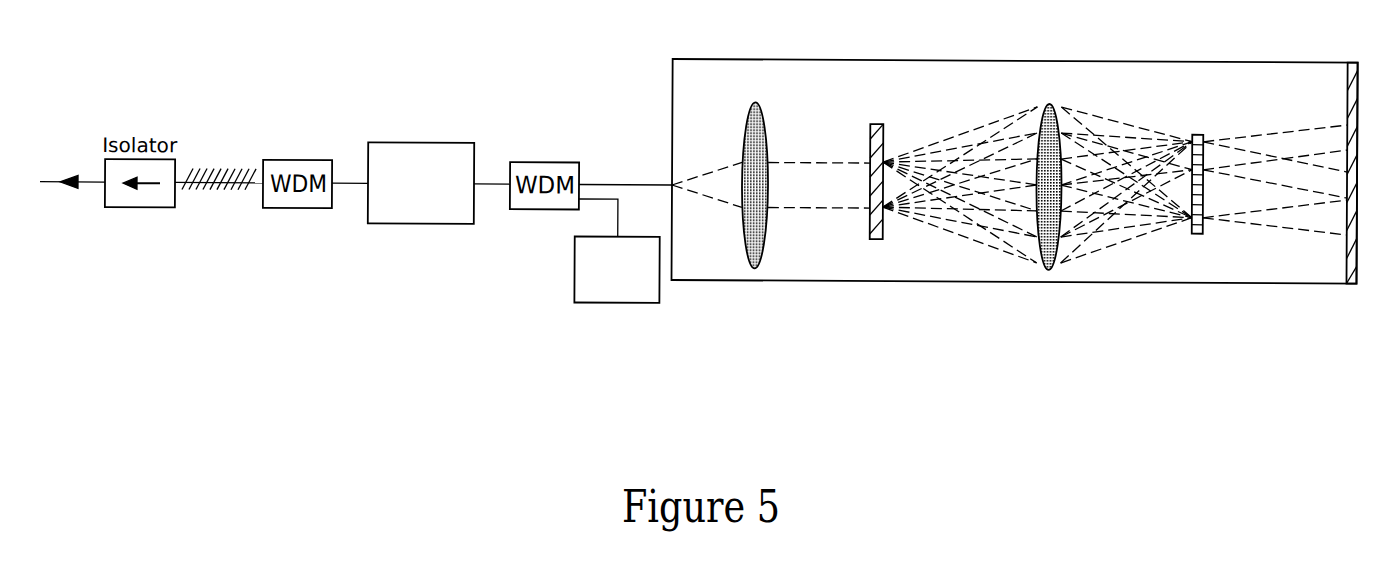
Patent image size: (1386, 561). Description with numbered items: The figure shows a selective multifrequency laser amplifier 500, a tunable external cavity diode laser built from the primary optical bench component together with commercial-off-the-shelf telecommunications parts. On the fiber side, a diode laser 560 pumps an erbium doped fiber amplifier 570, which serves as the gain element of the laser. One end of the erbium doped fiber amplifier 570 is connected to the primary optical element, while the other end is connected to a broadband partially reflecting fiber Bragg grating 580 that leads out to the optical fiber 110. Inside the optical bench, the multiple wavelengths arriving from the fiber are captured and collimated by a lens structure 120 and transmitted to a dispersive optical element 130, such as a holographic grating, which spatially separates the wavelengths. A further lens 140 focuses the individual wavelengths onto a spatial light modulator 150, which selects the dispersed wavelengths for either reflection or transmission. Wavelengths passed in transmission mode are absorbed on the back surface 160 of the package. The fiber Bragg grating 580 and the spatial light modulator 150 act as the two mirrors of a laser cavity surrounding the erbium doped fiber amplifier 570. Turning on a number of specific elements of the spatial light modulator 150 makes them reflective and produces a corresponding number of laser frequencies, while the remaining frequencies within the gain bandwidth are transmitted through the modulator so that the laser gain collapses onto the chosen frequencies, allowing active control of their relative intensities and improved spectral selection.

The optical fiber 110 is at (72, 207).
The fiber Bragg grating 580 is at (223, 181).
The erbium doped fiber amplifier 570 is at (421, 172).
The diode laser 560 is at (617, 263).
The selective multifrequency laser amplifier 500 is at (1015, 156).
The lens structure 120 is at (752, 204).
The dispersive optical element 130 is at (874, 216).
The lens 140 is at (1049, 206).
The spatial light modulator 150 is at (1194, 222).
The back surface 160 is at (1347, 186).